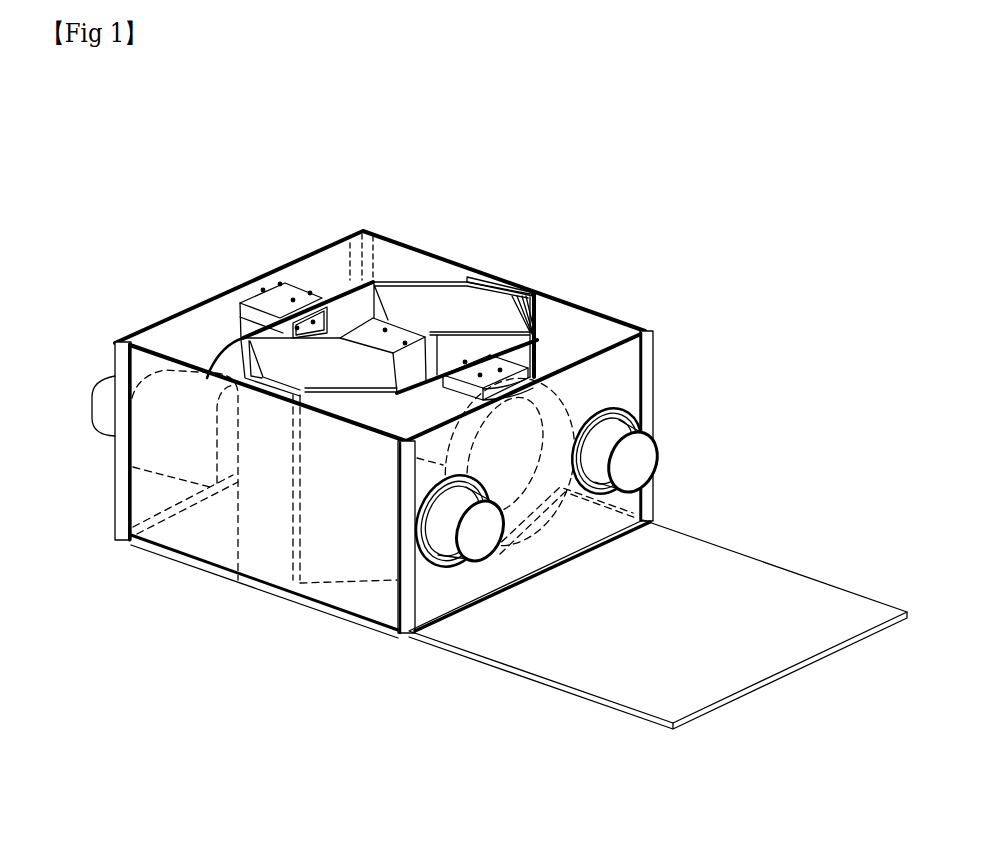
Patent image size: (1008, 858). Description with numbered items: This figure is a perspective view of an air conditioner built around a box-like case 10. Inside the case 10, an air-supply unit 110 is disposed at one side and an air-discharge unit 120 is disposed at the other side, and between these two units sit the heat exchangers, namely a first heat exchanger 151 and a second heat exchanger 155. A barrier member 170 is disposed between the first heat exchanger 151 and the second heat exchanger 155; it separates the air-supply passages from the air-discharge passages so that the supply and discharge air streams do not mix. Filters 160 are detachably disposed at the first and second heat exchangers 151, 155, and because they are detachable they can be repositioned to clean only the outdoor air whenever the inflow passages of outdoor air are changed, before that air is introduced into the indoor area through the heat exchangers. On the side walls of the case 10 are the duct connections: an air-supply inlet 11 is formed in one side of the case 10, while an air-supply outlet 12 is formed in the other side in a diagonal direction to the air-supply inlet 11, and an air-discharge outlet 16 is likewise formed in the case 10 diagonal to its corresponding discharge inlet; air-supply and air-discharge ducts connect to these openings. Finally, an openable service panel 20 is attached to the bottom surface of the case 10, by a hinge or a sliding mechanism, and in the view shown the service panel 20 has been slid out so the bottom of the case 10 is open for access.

The case 10 is at (571, 313).
The air-supply inlet 11 is at (654, 455).
The air-supply outlet 12 is at (115, 410).
The air-discharge outlet 16 is at (485, 540).
The service panel 20 is at (772, 592).
The air-supply unit 110 is at (293, 293).
The air-discharge unit 120 is at (513, 298).
The first heat exchanger 151 is at (443, 293).
The second heat exchanger 155 is at (277, 358).
The filters 160 is at (493, 347).
The barrier member 170 is at (390, 327).